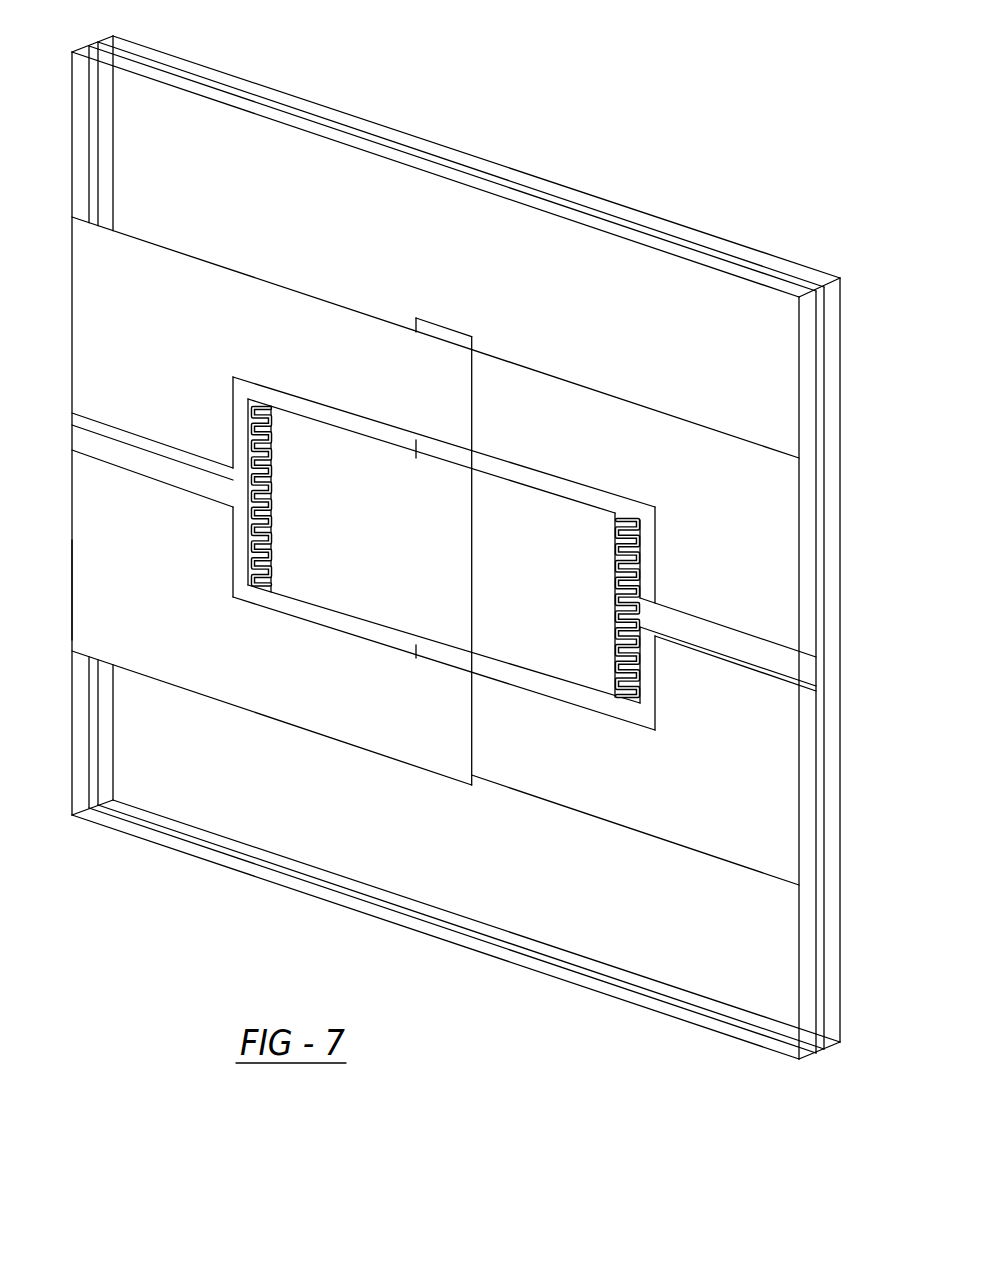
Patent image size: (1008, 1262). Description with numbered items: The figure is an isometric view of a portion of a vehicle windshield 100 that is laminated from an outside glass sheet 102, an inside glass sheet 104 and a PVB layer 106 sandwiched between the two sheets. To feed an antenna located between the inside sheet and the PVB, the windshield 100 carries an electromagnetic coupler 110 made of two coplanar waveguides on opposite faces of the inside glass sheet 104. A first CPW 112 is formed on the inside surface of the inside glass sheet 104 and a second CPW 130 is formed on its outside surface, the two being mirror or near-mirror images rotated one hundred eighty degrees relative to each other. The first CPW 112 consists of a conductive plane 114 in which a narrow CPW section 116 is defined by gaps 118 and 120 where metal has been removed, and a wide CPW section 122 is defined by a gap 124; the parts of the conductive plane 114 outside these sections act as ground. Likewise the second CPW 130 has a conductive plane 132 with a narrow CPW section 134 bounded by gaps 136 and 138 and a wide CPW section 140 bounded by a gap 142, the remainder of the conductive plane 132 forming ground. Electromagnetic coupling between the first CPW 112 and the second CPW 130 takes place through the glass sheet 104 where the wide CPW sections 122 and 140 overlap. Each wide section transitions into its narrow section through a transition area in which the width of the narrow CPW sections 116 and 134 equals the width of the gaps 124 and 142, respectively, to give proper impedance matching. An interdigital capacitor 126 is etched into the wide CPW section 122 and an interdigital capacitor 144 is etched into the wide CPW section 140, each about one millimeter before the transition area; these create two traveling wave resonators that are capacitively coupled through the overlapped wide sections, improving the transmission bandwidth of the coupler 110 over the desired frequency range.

The vehicle windshield 100 is at (478, 93).
The outside glass sheet 102 is at (838, 303).
The inside glass sheet 104 is at (807, 327).
The PVB layer 106 is at (820, 1008).
The electromagnetic coupler 110 is at (452, 296).
The first CPW 112 is at (630, 836).
The conductive plane 114 is at (543, 782).
The narrow CPW section 116 is at (777, 652).
The gap 118 is at (720, 622).
The gap 120 is at (748, 667).
The wide CPW section 122 is at (510, 512).
The gap 124 is at (587, 493).
The interdigital capacitor 126 is at (632, 580).
The second CPW 130 is at (302, 248).
The conductive plane 132 is at (107, 612).
The narrow CPW section 134 is at (82, 435).
The gap 136 is at (131, 432).
The gap 138 is at (165, 485).
The wide CPW section 140 is at (348, 463).
The gap 142 is at (282, 403).
The interdigital capacitor 144 is at (270, 507).